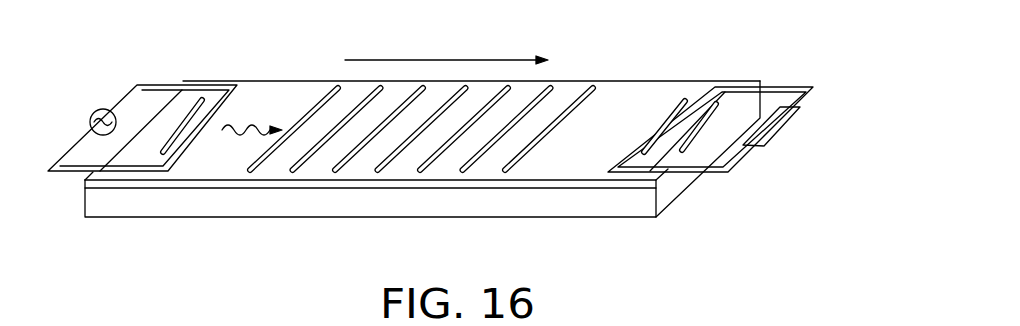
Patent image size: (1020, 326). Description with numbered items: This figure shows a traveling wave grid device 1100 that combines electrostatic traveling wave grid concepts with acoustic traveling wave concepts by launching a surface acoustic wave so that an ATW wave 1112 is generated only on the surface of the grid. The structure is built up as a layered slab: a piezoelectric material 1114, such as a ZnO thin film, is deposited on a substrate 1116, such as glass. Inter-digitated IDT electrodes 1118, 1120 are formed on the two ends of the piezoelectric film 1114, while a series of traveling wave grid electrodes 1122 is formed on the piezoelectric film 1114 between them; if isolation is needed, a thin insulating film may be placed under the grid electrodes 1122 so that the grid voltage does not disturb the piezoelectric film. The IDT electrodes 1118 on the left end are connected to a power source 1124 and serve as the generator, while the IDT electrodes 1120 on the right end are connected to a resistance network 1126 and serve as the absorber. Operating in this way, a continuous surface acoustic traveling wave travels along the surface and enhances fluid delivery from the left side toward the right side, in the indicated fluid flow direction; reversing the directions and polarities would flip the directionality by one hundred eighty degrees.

The traveling wave grid device 1100 is at (603, 49).
The ATW wave 1112 is at (232, 123).
The piezoelectric material 1114 is at (87, 187).
The substrate 1116 is at (128, 207).
The IDT electrodes 1118 is at (155, 173).
The IDT electrodes 1120 is at (627, 177).
The traveling wave grid electrodes 1122 is at (558, 121).
The power source 1124 is at (95, 112).
The resistance network 1126 is at (785, 125).